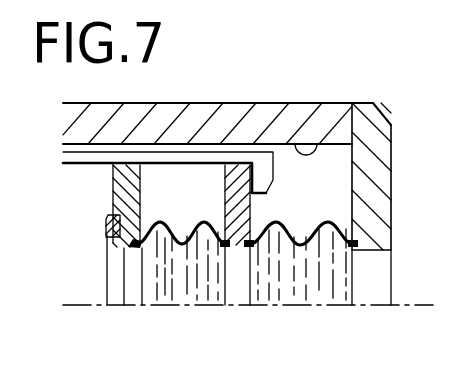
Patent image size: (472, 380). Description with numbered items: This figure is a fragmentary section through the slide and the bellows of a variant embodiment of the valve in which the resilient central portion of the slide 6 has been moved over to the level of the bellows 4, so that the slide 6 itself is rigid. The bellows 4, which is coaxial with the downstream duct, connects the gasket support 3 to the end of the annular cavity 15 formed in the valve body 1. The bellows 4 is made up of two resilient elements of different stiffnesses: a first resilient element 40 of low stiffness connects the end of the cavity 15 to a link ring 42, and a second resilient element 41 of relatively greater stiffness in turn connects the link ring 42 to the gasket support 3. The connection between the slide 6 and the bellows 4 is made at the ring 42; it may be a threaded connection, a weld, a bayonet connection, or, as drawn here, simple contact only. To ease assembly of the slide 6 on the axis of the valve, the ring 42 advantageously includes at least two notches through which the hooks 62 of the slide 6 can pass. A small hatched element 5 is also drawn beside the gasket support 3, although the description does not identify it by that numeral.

The valve body 1 is at (197, 110).
The gasket support 3 is at (115, 183).
The bellows 4 is at (160, 308).
The seal element 5 is at (107, 225).
The slide 6 is at (218, 160).
The annular cavity 15 is at (320, 144).
The first resilient element 40 is at (333, 224).
The second resilient element 41 is at (166, 224).
The link ring 42 is at (233, 213).
The hooks 62 is at (258, 177).